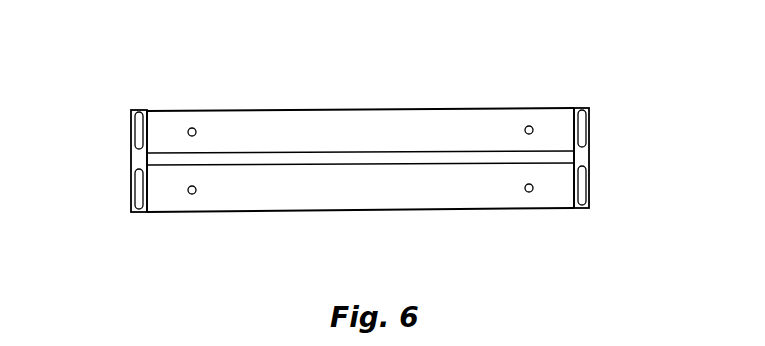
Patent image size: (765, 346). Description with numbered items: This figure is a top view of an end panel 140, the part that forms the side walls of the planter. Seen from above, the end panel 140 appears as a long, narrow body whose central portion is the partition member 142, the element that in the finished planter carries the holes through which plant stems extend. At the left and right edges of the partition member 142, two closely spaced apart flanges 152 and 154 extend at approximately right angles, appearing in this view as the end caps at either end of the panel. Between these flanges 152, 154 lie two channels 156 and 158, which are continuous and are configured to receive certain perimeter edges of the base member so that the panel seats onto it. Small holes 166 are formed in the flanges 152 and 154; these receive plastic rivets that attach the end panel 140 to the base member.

The end panel 140 is at (549, 73).
The partition member 142 is at (392, 157).
The flange 152 is at (130, 120).
The flange 154 is at (151, 124).
The channel 156 is at (133, 202).
The channel 158 is at (141, 110).
The small holes 166 is at (197, 132).